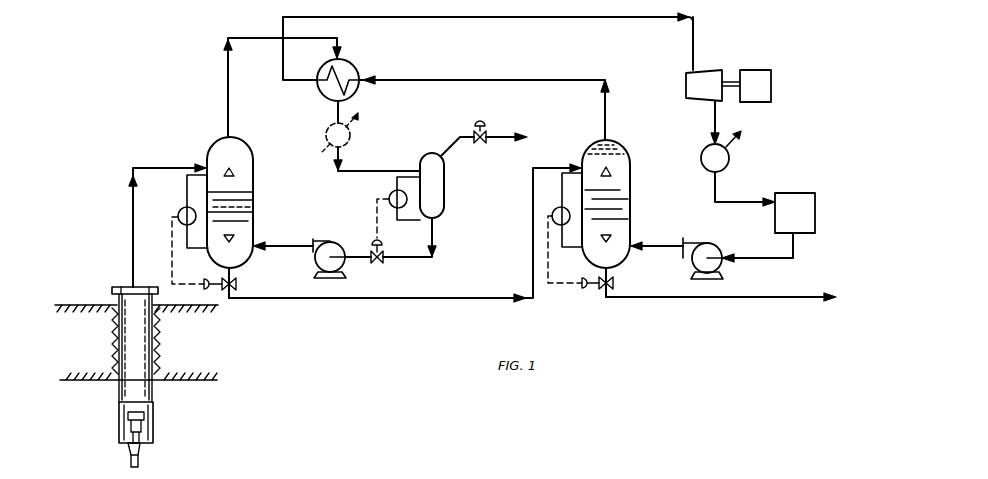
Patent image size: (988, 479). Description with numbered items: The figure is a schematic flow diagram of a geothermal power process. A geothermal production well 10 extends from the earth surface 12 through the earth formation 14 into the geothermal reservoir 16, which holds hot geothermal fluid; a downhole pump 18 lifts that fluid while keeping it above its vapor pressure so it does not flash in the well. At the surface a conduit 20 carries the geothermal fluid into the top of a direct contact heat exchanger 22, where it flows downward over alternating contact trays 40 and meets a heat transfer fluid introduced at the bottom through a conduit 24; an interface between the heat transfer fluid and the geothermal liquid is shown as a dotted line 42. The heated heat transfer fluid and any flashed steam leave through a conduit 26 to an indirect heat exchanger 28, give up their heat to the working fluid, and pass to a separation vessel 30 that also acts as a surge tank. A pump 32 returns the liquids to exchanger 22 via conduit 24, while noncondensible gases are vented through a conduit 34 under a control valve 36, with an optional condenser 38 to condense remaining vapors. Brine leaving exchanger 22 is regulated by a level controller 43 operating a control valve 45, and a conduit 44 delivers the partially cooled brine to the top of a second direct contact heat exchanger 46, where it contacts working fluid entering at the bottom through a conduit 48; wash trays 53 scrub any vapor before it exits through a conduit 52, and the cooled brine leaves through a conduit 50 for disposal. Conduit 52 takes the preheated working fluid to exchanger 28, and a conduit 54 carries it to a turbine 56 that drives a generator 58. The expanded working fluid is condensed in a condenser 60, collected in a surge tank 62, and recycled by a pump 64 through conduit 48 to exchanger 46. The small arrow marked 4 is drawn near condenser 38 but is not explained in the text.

The arrow indicating flow direction 4 is at (353, 114).
The geothermal production well 10 is at (140, 350).
The earth surface 12 is at (79, 305).
The earth formation 14 is at (86, 358).
The geothermal reservoir 16 is at (192, 427).
The downhole pump 18 is at (124, 448).
The conduit 20 is at (134, 254).
The direct contact heat exchanger 22 is at (209, 152).
The conduit 24 is at (282, 247).
The conduit 26 is at (230, 117).
The indirect heat exchanger 28 is at (352, 73).
The separation vessel 30 is at (446, 191).
The pump 32 is at (318, 265).
The conduit 34 is at (443, 155).
The control valve 36 is at (490, 137).
The condenser 38 is at (328, 130).
The contact trays 40 is at (240, 190).
The HTF liquid/geothermal liquid interface 42 is at (252, 207).
The level controller 43 is at (182, 210).
The conduit 44 is at (291, 300).
The control valve 45 is at (240, 289).
The direct contact heat exchanger 46 is at (582, 156).
The conduit 48 is at (672, 247).
The conduit 50 is at (644, 298).
The conduit 52 is at (610, 122).
The wash trays 53 is at (618, 163).
The conduit 54 is at (505, 12).
The turbine 56 is at (704, 72).
The generator 58 is at (760, 70).
The condenser 60 is at (704, 170).
The surge tank 62 is at (791, 193).
The pump 64 is at (716, 250).